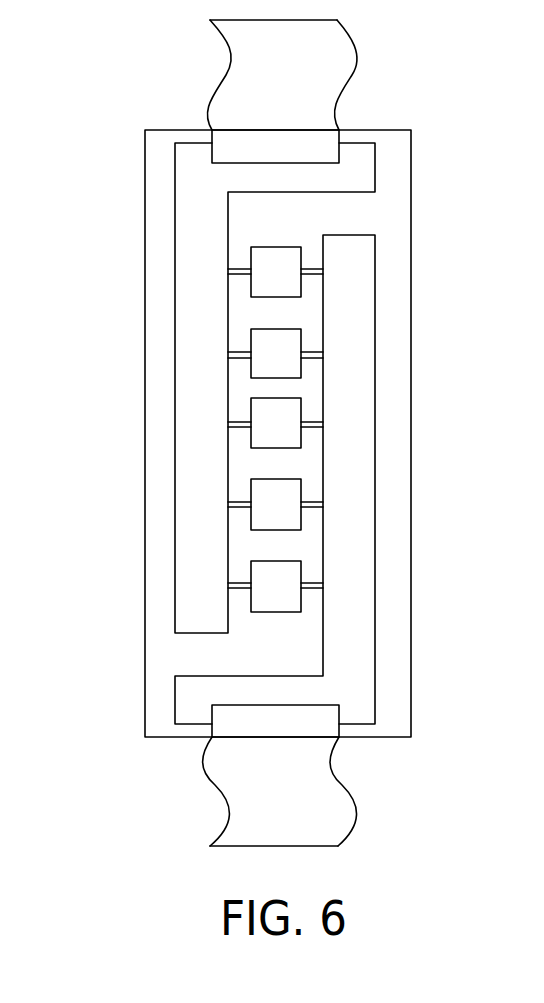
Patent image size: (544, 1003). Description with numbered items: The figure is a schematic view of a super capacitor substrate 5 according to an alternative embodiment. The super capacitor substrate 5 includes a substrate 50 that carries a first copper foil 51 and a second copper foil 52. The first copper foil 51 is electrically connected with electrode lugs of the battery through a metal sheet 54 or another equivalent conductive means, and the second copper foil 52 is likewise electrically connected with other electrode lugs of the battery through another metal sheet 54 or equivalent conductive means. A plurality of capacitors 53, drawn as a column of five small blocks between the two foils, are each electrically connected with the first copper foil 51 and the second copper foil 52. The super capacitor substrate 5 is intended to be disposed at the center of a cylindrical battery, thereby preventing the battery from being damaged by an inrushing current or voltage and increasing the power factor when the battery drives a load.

The super capacitor substrate 5 is at (411, 434).
The substrate 50 is at (372, 220).
The first copper foil 51 is at (187, 212).
The second copper foil 52 is at (355, 620).
The capacitor 53 is at (275, 290).
The metal sheet 54 is at (308, 107).